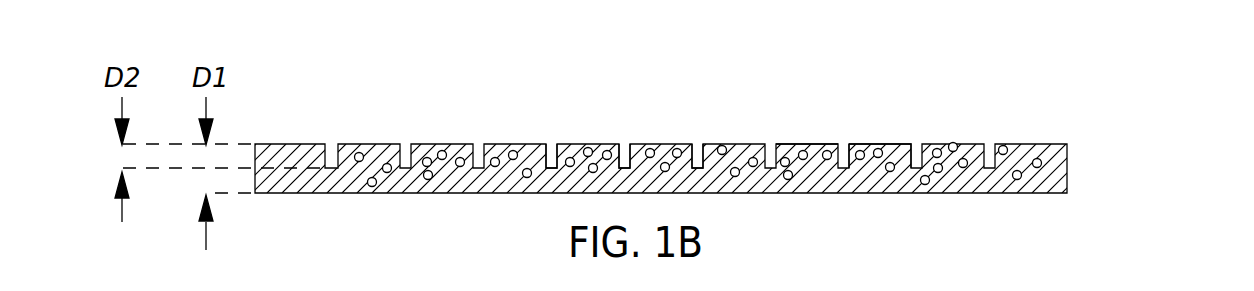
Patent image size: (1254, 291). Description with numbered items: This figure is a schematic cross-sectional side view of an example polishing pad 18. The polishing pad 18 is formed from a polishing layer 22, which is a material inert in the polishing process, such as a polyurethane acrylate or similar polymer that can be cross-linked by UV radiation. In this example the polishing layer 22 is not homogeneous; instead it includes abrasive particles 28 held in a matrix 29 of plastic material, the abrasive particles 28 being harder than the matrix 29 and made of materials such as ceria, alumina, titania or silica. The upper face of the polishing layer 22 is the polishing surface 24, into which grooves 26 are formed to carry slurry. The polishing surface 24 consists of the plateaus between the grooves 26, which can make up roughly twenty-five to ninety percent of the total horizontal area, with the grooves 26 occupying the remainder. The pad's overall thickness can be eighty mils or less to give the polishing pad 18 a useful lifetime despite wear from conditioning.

The polishing pad 18 is at (693, 100).
The polishing layer 22 is at (1067, 168).
The polishing surface 24 is at (880, 145).
The grooves 26 is at (697, 145).
The abrasive particles 28 is at (723, 145).
The matrix 29 is at (815, 145).